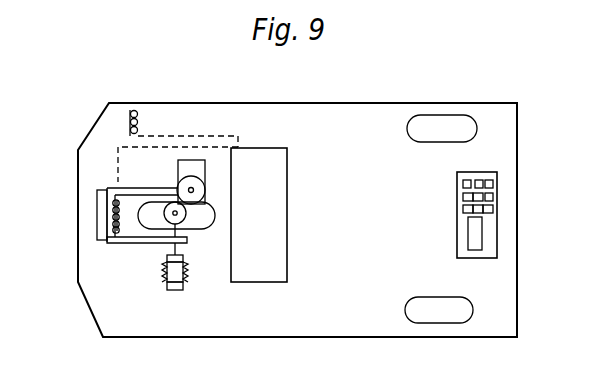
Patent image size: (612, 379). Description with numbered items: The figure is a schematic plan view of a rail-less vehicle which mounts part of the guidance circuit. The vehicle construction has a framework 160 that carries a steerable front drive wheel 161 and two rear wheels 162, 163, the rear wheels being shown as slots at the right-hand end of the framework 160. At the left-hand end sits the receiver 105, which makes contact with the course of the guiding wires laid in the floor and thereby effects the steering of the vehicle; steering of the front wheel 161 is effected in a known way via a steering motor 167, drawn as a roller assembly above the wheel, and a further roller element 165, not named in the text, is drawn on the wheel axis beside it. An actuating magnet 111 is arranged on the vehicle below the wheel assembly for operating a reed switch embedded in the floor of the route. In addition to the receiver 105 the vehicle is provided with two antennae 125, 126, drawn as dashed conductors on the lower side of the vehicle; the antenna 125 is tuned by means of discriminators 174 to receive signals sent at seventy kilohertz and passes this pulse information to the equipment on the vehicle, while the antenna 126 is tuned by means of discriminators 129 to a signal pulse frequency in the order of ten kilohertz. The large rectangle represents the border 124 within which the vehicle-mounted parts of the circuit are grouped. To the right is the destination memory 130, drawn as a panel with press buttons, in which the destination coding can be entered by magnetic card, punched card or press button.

The receiver 105 is at (102, 228).
The actuating magnet 111 is at (173, 284).
The border 124 is at (278, 238).
The antenna 125 is at (208, 143).
The antenna 126 is at (185, 137).
The discriminators 129 is at (139, 110).
The destination memory 130 is at (462, 227).
The framework 160 is at (510, 138).
The steerable front drive wheel 161 is at (207, 227).
The rear wheel 162 is at (457, 320).
The rear wheel 163 is at (468, 138).
The lower roller 165 is at (172, 220).
The steering motor 167 is at (182, 180).
The discriminators 174 is at (112, 203).